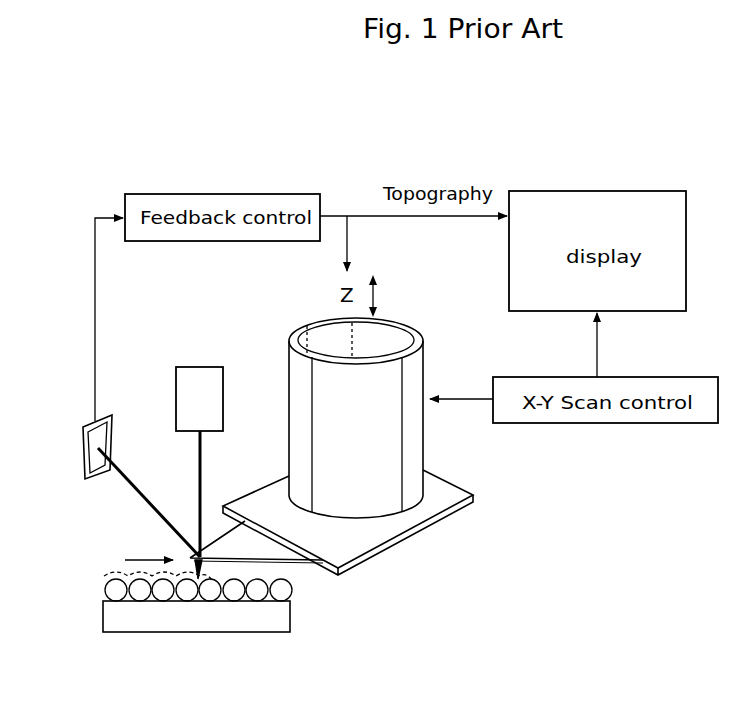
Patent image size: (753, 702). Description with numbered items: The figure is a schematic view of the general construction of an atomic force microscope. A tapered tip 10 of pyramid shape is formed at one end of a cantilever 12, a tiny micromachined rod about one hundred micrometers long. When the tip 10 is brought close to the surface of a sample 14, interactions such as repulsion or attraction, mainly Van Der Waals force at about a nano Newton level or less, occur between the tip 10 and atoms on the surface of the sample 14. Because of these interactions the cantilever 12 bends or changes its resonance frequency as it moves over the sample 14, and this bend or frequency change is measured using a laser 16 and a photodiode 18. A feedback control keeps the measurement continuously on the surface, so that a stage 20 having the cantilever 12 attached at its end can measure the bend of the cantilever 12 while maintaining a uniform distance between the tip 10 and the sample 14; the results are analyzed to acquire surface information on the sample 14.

The tip 10 is at (210, 600).
The cantilever 12 is at (290, 561).
The sample 14 is at (140, 620).
The laser 16 is at (198, 380).
The photodiode 18 is at (83, 453).
The stage 20 is at (410, 430).